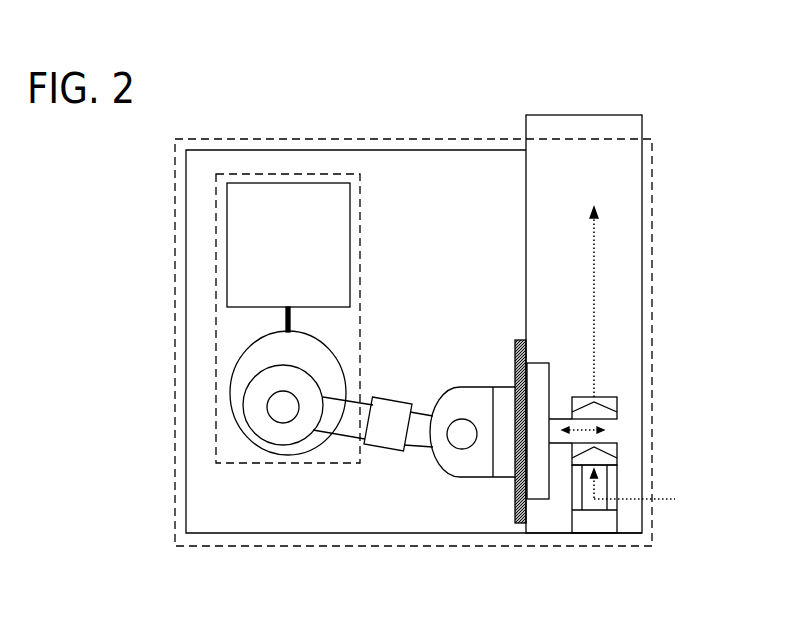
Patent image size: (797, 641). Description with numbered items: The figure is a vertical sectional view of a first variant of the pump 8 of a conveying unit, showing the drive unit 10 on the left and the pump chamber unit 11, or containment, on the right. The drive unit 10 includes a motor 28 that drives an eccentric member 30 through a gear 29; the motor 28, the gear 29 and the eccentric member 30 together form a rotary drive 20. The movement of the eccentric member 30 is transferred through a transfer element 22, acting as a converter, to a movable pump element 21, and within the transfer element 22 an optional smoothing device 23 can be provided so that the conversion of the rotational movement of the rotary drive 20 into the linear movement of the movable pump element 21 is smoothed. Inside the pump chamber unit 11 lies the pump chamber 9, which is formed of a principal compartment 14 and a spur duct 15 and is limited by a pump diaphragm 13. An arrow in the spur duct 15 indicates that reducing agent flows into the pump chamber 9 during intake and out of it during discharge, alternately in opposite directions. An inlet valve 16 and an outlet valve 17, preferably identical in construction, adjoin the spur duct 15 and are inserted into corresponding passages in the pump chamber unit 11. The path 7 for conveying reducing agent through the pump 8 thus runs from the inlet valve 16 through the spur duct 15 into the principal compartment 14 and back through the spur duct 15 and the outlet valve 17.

The path 7 is at (593, 283).
The pump 8 is at (651, 139).
The pump chamber 9 is at (572, 510).
The drive unit 10 is at (331, 113).
The pump chamber unit 11 is at (630, 74).
The pump diaphragm 13 is at (523, 523).
The principal compartment 14 is at (538, 500).
The spur duct 15 is at (617, 429).
The inlet valve 16 is at (617, 452).
The outlet valve 17 is at (617, 397).
The rotary drive 20 is at (215, 290).
The movable pump element 21 is at (467, 477).
The transfer element 22 is at (418, 450).
The smoothing device 23 is at (388, 452).
The motor 28 is at (253, 183).
The gear 29 is at (284, 322).
The eccentric member 30 is at (253, 437).